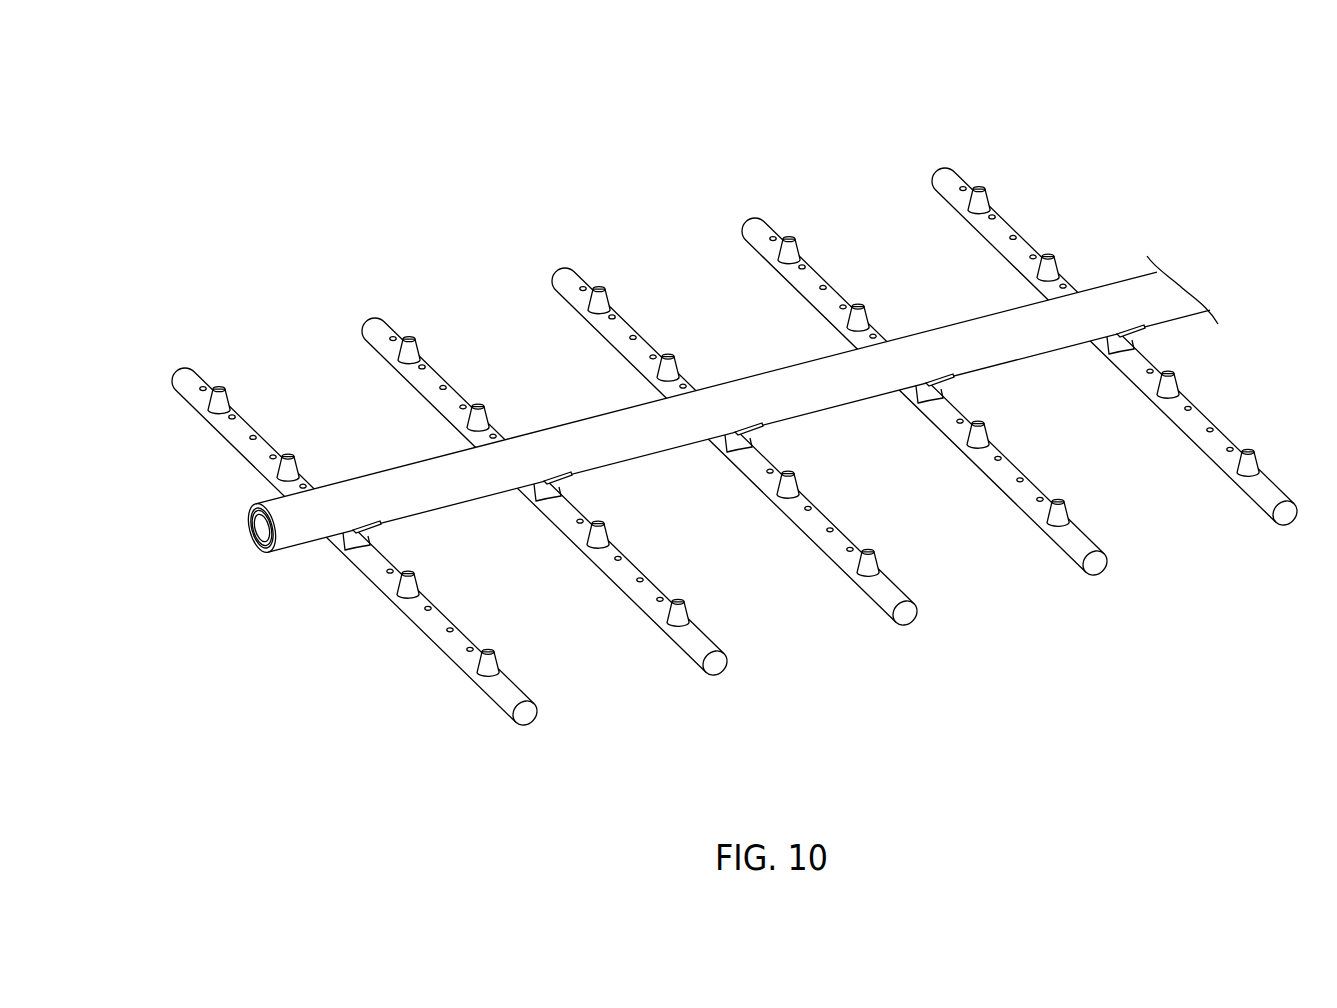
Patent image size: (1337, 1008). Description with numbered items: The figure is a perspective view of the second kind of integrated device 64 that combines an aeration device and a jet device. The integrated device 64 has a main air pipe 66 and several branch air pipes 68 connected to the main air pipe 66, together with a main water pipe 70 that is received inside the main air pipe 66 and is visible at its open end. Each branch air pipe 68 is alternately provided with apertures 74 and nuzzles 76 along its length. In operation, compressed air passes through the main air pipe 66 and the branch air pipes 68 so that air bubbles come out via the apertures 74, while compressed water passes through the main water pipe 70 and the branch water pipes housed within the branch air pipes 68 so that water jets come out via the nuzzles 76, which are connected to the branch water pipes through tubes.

The integrated device 64 is at (719, 407).
The main air pipe 66 is at (397, 507).
The branch air pipe 68 is at (183, 380).
The main water pipe 70 is at (259, 550).
The aperture 74 is at (393, 571).
The nuzzle 76 is at (412, 590).